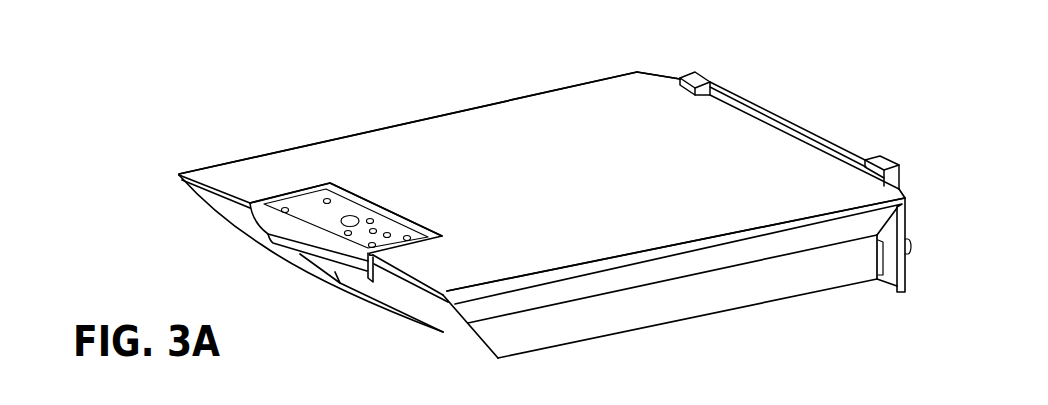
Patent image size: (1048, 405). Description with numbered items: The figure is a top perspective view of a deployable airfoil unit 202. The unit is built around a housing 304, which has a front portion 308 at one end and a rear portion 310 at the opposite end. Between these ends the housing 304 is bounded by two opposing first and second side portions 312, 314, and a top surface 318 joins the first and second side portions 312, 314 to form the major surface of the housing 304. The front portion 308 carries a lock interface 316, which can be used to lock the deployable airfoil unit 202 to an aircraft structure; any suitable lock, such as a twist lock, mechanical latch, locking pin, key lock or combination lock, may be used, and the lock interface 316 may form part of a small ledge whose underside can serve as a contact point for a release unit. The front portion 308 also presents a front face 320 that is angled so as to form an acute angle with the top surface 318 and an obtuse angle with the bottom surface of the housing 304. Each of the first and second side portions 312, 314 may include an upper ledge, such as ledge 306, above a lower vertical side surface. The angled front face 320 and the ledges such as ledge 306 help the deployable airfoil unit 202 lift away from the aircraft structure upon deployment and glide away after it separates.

The deployable airfoil unit 202 is at (876, 91).
The housing 304 is at (837, 193).
The ledge 306 is at (772, 238).
The front portion 308 is at (360, 180).
The rear portion 310 is at (712, 120).
The first side portion 312 is at (503, 97).
The second side portion 314 is at (708, 297).
The lock interface 316 is at (322, 221).
The top surface 318 is at (577, 208).
The front face 320 is at (269, 240).